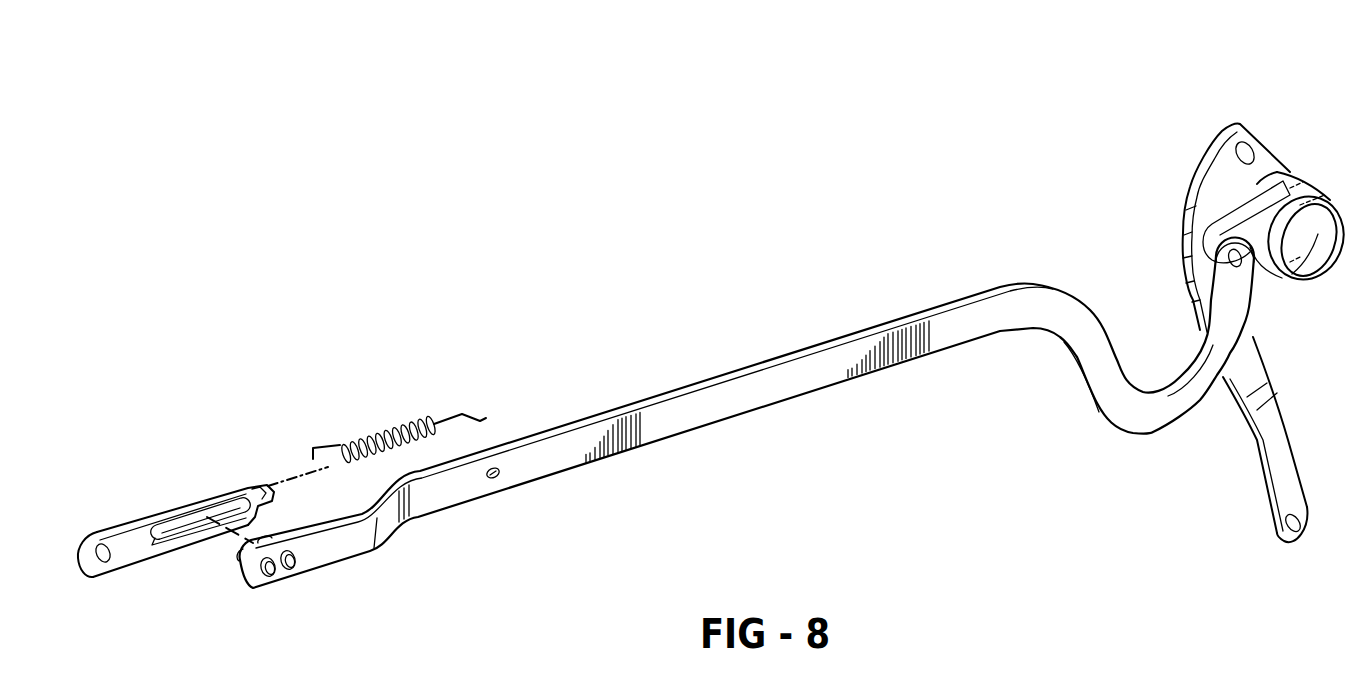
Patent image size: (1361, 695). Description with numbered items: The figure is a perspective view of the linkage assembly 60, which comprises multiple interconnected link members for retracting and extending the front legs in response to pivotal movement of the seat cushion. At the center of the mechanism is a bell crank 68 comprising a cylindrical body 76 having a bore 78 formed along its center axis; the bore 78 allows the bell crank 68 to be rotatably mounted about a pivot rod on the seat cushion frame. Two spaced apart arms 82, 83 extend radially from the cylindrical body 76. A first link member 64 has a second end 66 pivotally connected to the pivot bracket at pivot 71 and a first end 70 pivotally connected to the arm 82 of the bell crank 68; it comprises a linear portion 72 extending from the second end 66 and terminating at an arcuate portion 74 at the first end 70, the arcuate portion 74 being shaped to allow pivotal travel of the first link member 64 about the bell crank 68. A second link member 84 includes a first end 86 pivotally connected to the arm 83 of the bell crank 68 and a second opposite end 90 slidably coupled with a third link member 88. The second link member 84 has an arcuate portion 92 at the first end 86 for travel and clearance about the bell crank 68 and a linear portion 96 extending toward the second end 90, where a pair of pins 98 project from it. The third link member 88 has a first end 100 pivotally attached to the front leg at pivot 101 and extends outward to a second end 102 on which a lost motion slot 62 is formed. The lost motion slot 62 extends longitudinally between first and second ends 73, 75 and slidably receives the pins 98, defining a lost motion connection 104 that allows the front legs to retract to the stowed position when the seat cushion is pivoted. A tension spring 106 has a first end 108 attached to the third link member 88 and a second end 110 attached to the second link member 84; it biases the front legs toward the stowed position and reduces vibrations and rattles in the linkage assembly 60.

The linkage assembly 60 is at (768, 438).
The lost motion slot 62 is at (180, 519).
The first link member 64 is at (1281, 470).
The second end 66 is at (1283, 543).
The bell crank 68 is at (1239, 191).
The first end 70 is at (1207, 191).
The pivot 71 is at (1307, 517).
The linear portion 72 is at (1267, 417).
The first end 73 is at (150, 537).
The arcuate portion 74 is at (1187, 280).
The second end 75 is at (240, 500).
The cylindrical body 76 is at (1320, 195).
The bore 78 is at (1293, 273).
The arm 82 is at (1258, 140).
The arm 83 is at (1213, 227).
The second link member 84 is at (743, 383).
The first end 86 is at (1243, 298).
The third link member 88 is at (180, 548).
The second end 90 is at (340, 548).
The arcuate portion 92 is at (1165, 413).
The linear portion 96 is at (543, 463).
The pins 98 is at (289, 570).
The first end 100 is at (89, 578).
The pivot 101 is at (107, 545).
The second end 102 is at (252, 490).
The lost motion connection 104 is at (222, 602).
The tension spring 106 is at (399, 399).
The first end 108 is at (314, 447).
The second end 110 is at (483, 417).